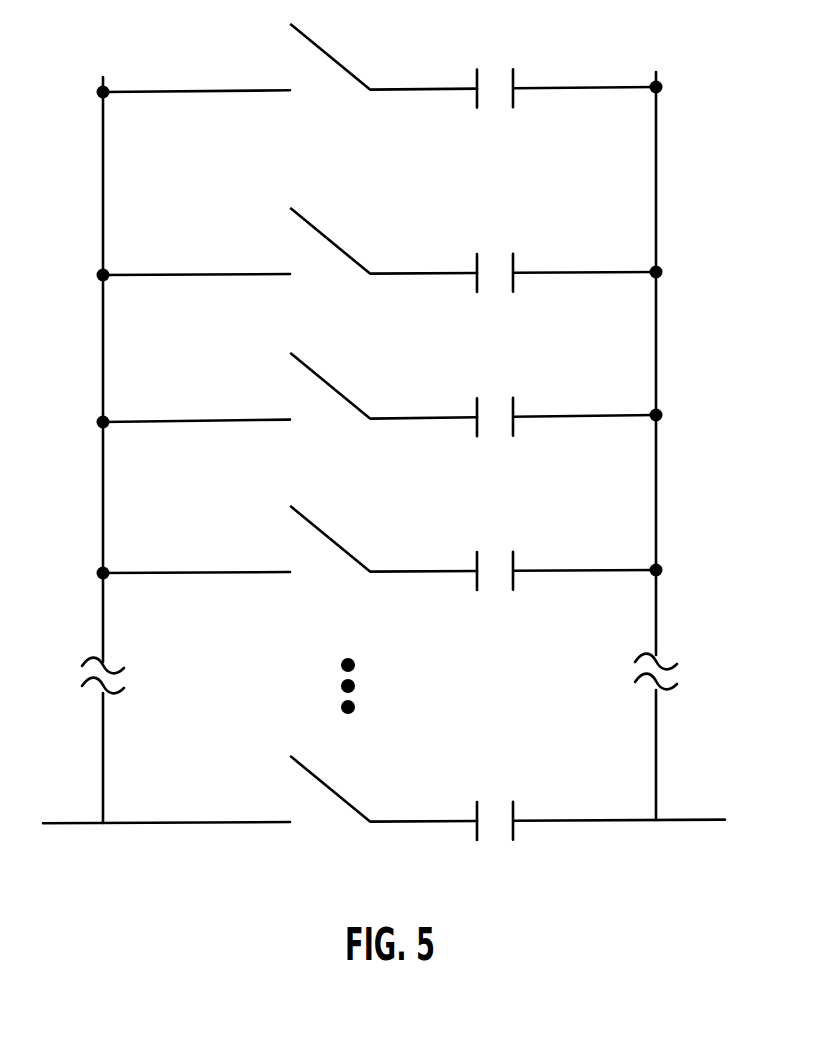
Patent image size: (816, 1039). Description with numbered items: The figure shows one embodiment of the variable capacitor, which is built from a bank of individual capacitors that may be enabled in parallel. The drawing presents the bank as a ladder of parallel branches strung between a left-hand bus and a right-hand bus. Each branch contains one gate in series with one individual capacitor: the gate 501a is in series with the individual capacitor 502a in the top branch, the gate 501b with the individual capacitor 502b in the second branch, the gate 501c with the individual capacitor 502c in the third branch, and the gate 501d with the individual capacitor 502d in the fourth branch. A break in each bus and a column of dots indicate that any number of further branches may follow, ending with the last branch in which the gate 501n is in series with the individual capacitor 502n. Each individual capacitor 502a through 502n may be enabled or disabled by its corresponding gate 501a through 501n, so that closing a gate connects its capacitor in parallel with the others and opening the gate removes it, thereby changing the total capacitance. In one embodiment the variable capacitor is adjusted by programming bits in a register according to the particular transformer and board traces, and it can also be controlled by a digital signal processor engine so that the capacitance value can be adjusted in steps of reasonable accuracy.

The gate 501a is at (290, 83).
The gate 501b is at (290, 261).
The gate 501c is at (290, 411).
The gate 501d is at (290, 560).
The gate 501n is at (260, 817).
The individual capacitor 502a is at (566, 103).
The individual capacitor 502b is at (566, 284).
The individual capacitor 502c is at (566, 430).
The individual capacitor 502d is at (566, 582).
The individual capacitor 502n is at (601, 838).